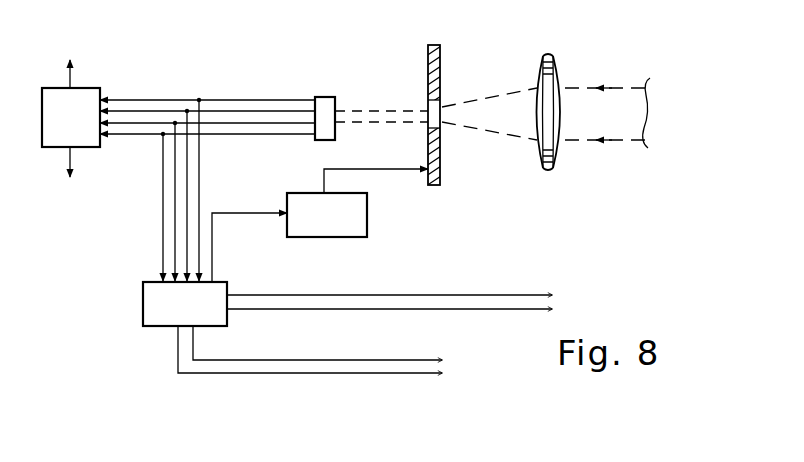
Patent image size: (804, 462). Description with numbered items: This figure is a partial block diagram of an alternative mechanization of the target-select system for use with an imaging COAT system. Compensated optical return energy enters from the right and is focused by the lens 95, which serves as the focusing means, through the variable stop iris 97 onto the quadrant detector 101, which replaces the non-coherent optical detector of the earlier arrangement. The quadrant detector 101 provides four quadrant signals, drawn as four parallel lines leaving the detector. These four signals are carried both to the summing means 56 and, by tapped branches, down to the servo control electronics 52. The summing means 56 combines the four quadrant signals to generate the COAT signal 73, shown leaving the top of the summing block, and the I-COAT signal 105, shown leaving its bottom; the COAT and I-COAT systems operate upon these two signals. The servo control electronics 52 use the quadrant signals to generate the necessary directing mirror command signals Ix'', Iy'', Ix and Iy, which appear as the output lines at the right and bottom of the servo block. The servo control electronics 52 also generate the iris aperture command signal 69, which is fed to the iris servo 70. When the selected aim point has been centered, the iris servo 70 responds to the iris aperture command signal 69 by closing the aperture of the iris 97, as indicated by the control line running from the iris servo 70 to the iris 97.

The servo control electronics 52 is at (146, 327).
The summing means 56 is at (100, 90).
The iris aperture command signal 69 is at (249, 212).
The iris servo 70 is at (306, 193).
The COAT signal 73 is at (70, 76).
The lens 95 is at (551, 57).
The variable stop iris 97 is at (441, 46).
The quadrant detector 101 is at (337, 96).
The I-COAT signal 105 is at (68, 160).